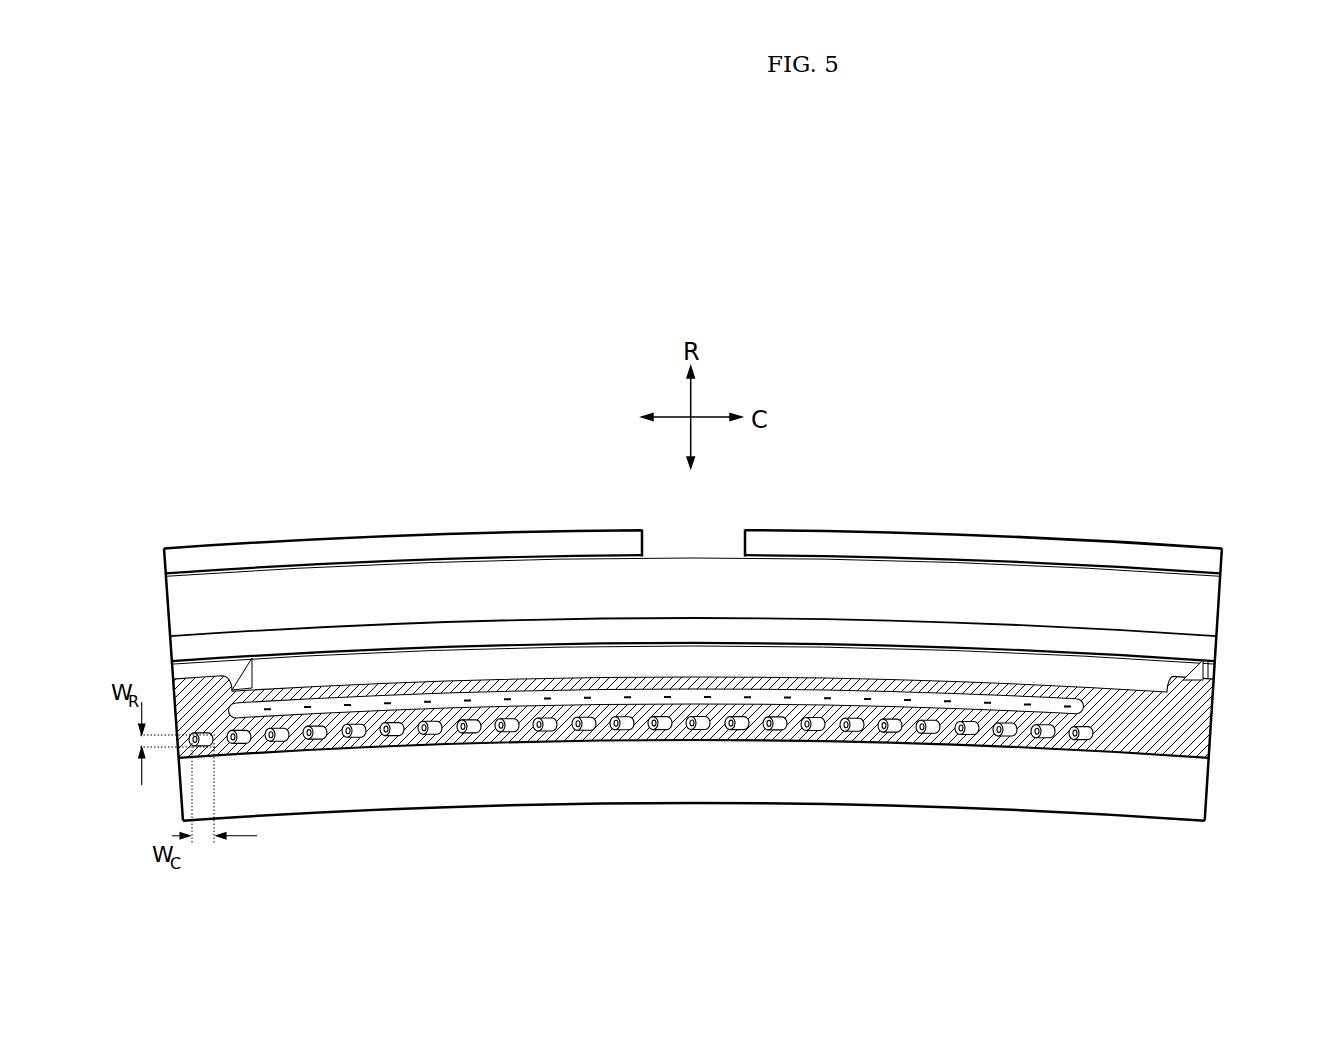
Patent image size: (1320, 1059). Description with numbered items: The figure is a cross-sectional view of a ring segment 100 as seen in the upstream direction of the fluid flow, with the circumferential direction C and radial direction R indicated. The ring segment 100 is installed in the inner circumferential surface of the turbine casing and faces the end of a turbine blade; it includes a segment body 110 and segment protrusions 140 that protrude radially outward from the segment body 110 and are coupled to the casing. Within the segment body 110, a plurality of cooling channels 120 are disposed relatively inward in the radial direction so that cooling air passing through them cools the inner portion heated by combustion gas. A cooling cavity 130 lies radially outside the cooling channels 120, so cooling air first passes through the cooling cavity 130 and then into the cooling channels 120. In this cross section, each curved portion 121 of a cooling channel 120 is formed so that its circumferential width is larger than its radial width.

The ring segment 100 is at (374, 389).
The segment body 110 is at (438, 793).
The cooling channel 120 is at (504, 750).
The curved portion 121 is at (352, 743).
The cooling cavity 130 is at (933, 703).
The segment protrusion 140 is at (1212, 593).